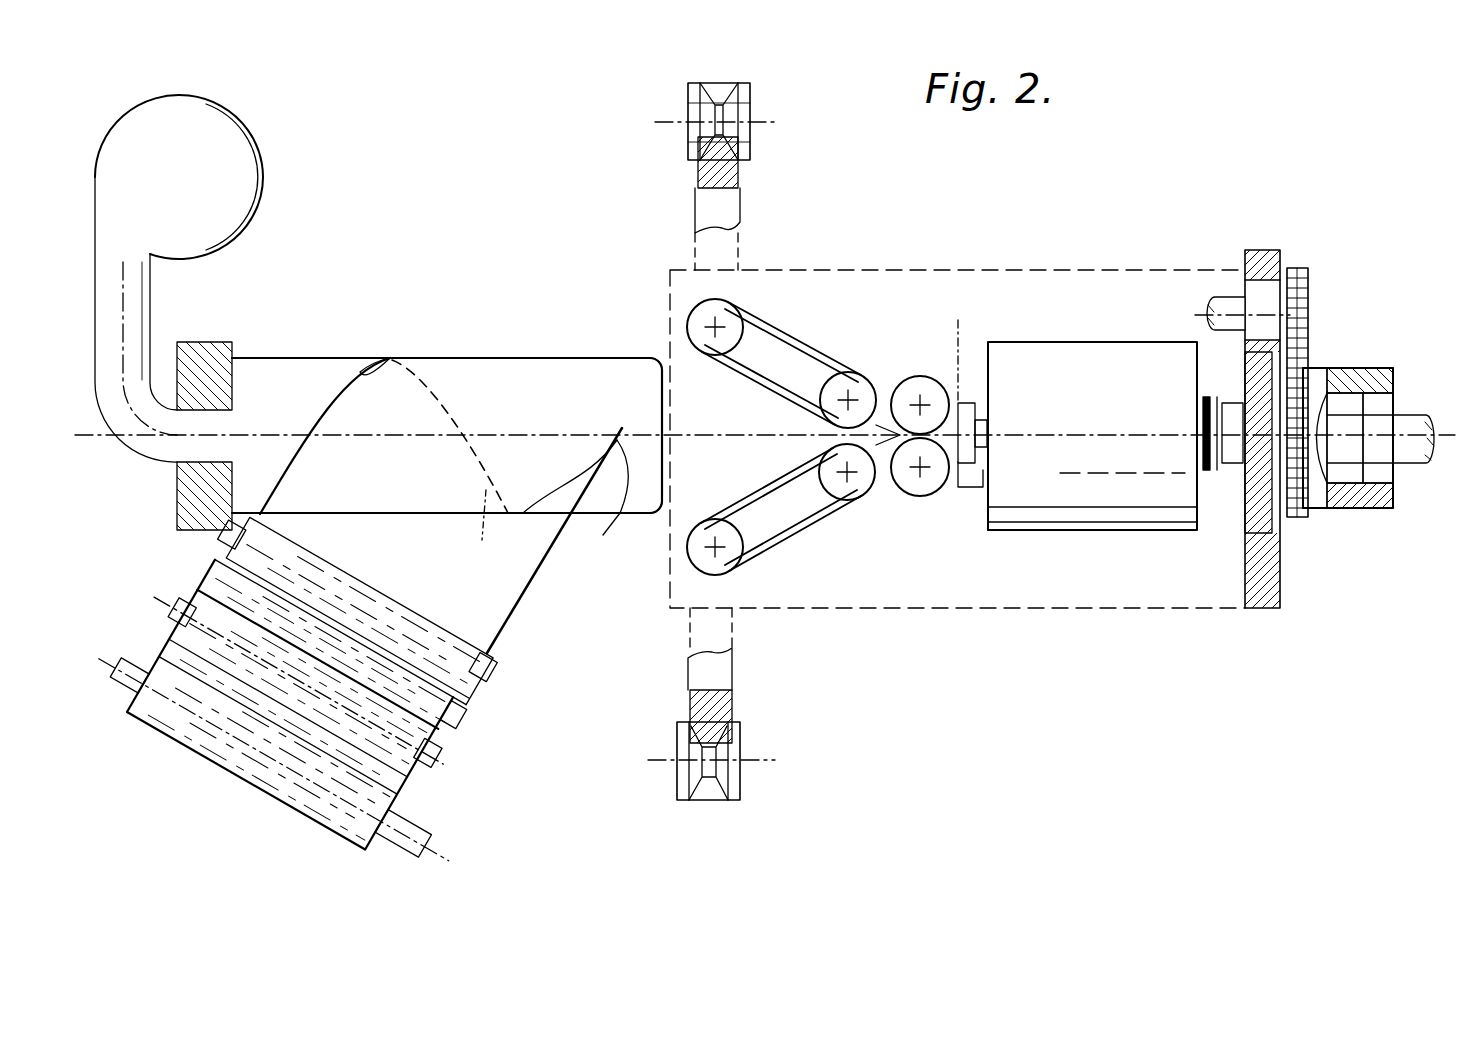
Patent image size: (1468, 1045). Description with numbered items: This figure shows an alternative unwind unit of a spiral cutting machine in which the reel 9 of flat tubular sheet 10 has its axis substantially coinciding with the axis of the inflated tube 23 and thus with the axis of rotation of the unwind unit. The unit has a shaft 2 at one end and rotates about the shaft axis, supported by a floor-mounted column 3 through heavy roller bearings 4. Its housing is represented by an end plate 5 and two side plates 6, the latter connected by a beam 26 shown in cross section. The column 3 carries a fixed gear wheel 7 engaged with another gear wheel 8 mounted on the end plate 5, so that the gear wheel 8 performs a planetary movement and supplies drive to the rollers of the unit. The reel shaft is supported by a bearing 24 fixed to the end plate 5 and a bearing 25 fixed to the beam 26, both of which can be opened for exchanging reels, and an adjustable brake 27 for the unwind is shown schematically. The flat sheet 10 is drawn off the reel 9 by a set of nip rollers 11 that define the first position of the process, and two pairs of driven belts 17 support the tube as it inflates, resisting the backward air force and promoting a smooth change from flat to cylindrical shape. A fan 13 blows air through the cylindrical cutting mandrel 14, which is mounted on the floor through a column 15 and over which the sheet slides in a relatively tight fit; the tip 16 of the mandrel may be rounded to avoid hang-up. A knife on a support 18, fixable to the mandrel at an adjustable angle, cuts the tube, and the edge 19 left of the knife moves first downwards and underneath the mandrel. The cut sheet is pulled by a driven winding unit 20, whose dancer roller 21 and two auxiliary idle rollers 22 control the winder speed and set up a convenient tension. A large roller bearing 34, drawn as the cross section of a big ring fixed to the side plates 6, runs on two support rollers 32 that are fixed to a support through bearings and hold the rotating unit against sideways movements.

The shaft 2 is at (1410, 413).
The column 3 is at (1373, 508).
The heavy roller bearings 4 is at (1373, 405).
The end plate 5 is at (1257, 611).
The side plates 6 is at (886, 285).
The fixed gear wheel 7 is at (1293, 513).
The gear wheel 8 is at (1308, 310).
The reel 9 is at (1087, 358).
The flat tubular sheet 10 is at (962, 360).
The nip rollers 11 is at (917, 377).
The fan 13 is at (237, 188).
The cylindrical cutting mandrel 14 is at (503, 368).
The column 15 is at (222, 340).
The tip 16 is at (655, 356).
The driven belts 17 is at (800, 342).
The support 18 is at (559, 540).
The edge 19 is at (390, 358).
The driven winding unit 20 is at (287, 788).
The dancer roller 21 is at (467, 708).
The auxiliary idle rollers 22 is at (503, 660).
The axis of the inflated tube 23 is at (150, 470).
The bearing 24 is at (1233, 457).
The bearing 25 is at (990, 460).
The beam 26 is at (967, 483).
The adjustable brake 27 is at (1206, 477).
The support rollers 32 is at (750, 105).
The large roller bearing 34 is at (740, 170).